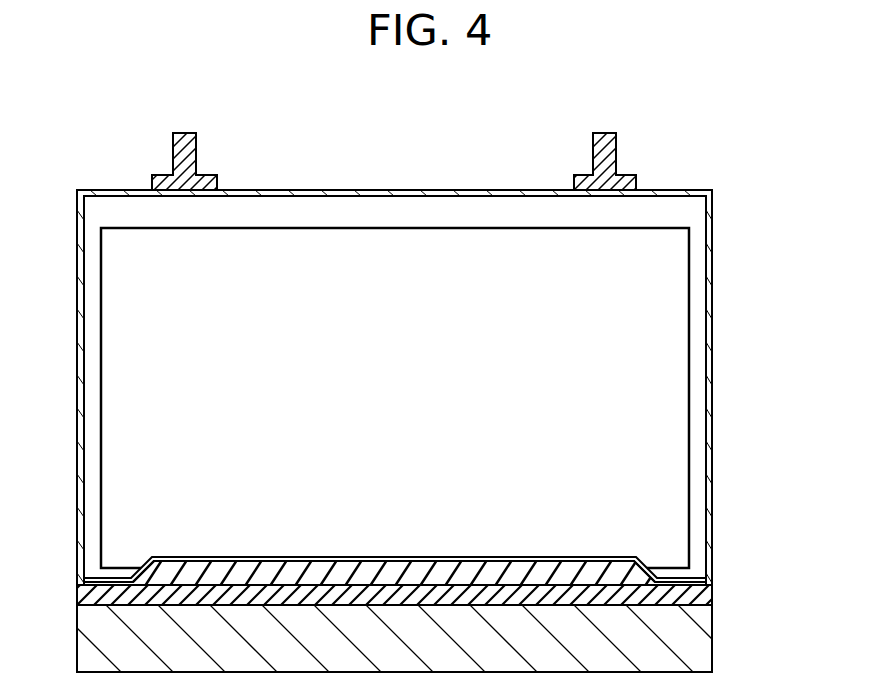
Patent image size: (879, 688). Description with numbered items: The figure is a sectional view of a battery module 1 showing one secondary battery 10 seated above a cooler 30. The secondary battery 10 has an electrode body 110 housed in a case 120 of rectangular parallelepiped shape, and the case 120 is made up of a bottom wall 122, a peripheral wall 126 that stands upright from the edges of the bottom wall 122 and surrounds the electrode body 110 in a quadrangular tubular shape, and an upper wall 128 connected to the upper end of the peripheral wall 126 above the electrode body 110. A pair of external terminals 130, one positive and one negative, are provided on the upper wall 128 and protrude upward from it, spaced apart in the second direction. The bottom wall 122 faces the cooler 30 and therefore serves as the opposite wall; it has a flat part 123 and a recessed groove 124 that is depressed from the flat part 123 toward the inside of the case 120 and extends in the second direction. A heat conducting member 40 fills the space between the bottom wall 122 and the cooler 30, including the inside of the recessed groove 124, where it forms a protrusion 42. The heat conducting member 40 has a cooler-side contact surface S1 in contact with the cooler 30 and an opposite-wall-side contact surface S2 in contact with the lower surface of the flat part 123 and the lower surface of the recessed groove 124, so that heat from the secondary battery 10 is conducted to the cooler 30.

The battery module 1 is at (98, 150).
The secondary battery 10 is at (776, 135).
The electrode body 110 is at (690, 228).
The case 120 is at (712, 191).
The bottom wall 122 is at (777, 490).
The flat part 123 is at (673, 580).
The recessed groove 124 is at (600, 557).
The peripheral wall 126 is at (712, 398).
The upper wall 128 is at (413, 190).
The external terminal 130 is at (616, 152).
The cooler 30 is at (695, 637).
The heat conducting member 40 is at (697, 594).
The protrusion 42 is at (167, 575).
The cooler-side contact surface S1 is at (138, 606).
The opposite-wall-side contact surface S2 is at (195, 558).